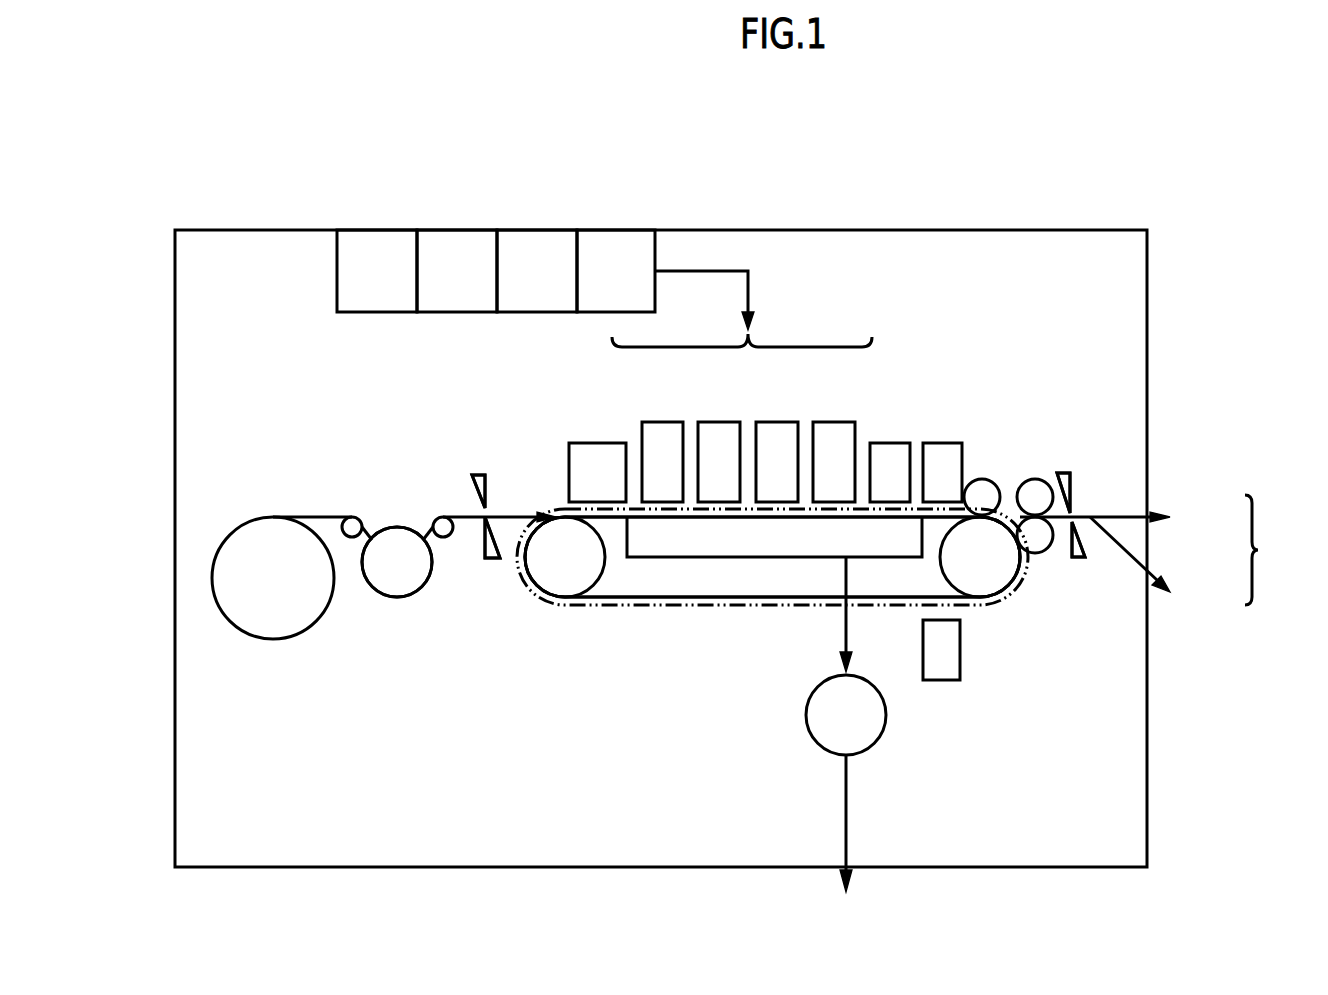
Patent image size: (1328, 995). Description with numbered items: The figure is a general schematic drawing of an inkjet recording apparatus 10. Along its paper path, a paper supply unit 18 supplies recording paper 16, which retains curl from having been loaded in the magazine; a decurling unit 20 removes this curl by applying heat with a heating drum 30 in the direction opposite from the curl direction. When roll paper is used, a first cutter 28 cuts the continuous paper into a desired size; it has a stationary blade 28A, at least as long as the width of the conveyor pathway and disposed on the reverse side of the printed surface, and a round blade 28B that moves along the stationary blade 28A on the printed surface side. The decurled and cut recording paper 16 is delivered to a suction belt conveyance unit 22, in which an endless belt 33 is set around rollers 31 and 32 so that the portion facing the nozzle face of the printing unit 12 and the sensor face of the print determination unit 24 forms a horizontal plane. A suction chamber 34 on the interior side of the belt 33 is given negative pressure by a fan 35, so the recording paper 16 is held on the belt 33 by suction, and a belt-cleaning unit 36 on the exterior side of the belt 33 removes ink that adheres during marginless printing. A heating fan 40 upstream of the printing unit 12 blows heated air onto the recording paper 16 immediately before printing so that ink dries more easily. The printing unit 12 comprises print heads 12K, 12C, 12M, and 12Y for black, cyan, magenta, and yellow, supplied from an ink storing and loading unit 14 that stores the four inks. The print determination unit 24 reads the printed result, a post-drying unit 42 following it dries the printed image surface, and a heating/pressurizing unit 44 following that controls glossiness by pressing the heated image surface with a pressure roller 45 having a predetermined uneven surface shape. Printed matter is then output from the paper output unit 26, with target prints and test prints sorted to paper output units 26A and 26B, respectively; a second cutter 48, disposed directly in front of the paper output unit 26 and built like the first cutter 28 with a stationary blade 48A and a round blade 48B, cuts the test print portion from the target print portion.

The inkjet recording apparatus 10 is at (899, 190).
The printing unit 12 is at (805, 338).
The print head 12K is at (667, 422).
The print head 12C is at (718, 422).
The print head 12M is at (775, 422).
The print head 12Y is at (838, 422).
The ink storing and loading unit 14 is at (621, 240).
The recording paper 16 is at (320, 516).
The paper supply unit 18 is at (275, 625).
The decurling unit 20 is at (403, 495).
The suction belt conveyance unit 22 is at (654, 608).
The print determination unit 24 is at (897, 457).
The paper output unit 26 is at (1275, 550).
The paper output unit 26A is at (1129, 514).
The paper output unit 26B is at (1164, 564).
The cutter 28 is at (480, 458).
The stationary blade 28A is at (485, 542).
The round blade 28B is at (485, 483).
The heating drum 30 is at (400, 587).
The roller 31 is at (542, 575).
The roller 32 is at (988, 583).
The endless belt 33 is at (790, 597).
The suction chamber 34 is at (728, 545).
The fan 35 is at (867, 735).
The belt-cleaning unit 36 is at (957, 660).
The heating fan 40 is at (587, 453).
The post-drying unit 42 is at (948, 453).
The heating/pressurizing unit 44 is at (1021, 471).
The pressure roller 45 is at (1035, 492).
The cutter 48 is at (1071, 467).
The stationary blade 48A is at (1068, 557).
The round blade 48B is at (1072, 495).